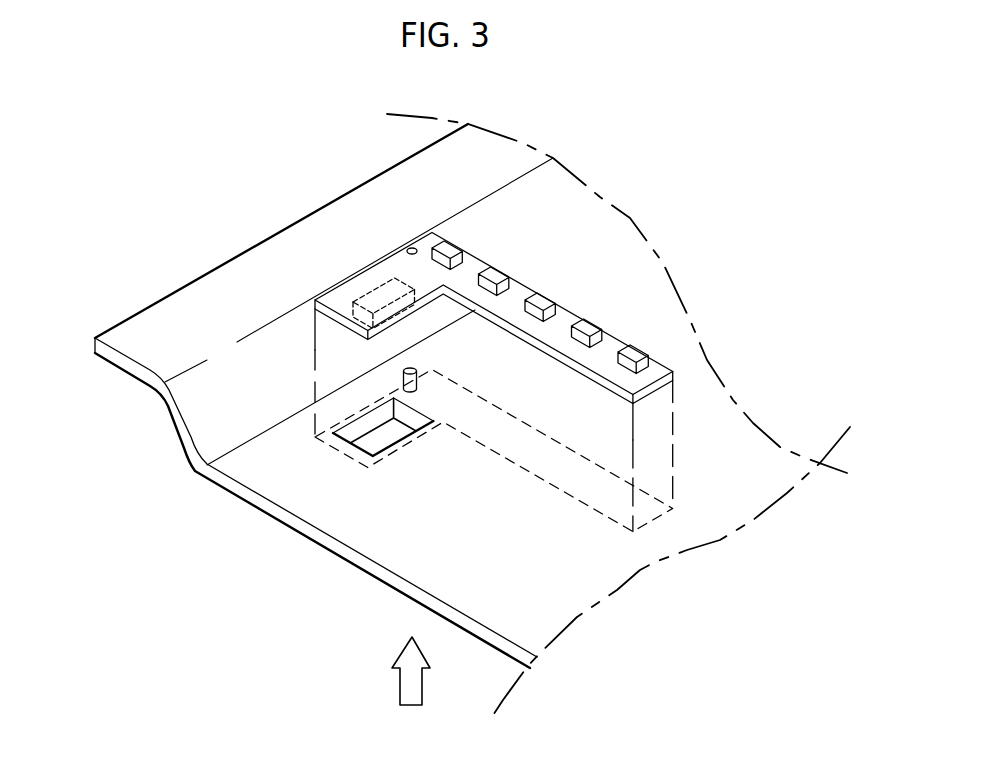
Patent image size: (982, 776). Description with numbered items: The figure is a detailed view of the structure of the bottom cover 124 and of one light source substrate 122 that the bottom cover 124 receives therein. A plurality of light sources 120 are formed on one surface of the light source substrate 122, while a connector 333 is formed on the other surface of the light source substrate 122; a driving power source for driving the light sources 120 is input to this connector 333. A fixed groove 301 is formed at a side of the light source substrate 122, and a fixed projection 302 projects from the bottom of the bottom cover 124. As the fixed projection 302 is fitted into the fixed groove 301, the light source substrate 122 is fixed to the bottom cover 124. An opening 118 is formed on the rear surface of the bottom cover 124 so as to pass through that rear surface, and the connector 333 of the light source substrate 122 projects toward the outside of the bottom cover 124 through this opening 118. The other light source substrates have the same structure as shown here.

The opening 118 is at (368, 440).
The light sources 120 is at (630, 355).
The light source substrate 122 is at (365, 283).
The bottom cover 124 is at (580, 573).
The fixed groove 301 is at (410, 248).
The fixed projection 302 is at (403, 383).
The connector 333 is at (395, 324).